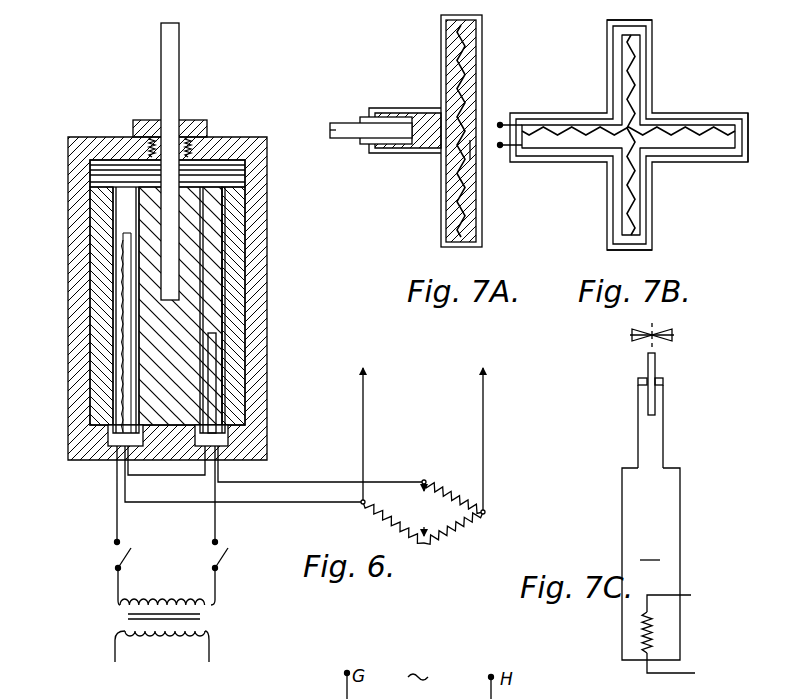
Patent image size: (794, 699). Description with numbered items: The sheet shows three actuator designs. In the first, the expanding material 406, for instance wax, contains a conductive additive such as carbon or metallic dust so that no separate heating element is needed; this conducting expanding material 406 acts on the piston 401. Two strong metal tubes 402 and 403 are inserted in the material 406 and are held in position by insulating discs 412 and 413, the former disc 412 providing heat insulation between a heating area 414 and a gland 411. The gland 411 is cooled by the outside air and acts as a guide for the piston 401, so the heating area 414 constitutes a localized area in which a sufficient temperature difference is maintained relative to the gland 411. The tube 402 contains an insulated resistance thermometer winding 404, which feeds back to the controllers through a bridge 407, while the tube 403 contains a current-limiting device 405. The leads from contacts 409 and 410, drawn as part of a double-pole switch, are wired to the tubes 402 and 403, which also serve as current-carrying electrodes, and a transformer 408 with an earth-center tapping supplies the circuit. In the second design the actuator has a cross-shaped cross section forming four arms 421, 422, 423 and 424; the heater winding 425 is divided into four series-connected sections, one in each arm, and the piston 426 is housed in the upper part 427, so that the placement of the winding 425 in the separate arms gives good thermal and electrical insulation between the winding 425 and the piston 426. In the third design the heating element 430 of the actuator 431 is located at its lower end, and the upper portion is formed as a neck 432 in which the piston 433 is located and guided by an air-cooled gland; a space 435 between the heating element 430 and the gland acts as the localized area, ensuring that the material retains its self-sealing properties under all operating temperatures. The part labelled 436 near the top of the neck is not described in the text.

In FIG. 6, the piston 401 is at (180, 65).
In FIG. 6, the metal tube 402 is at (100, 244).
In FIG. 6, the metal tube 403 is at (237, 262).
In FIG. 6, the insulated resistance thermometer winding 404 is at (112, 340).
In FIG. 6, the current-limiting device 405 is at (216, 334).
In FIG. 6, the conducting expanding material 406 is at (100, 396).
In FIG. 6, the bridge 407 is at (431, 458).
In FIG. 6, the transformer 408 is at (181, 615).
In FIG. 6, the contact 409 is at (99, 559).
In FIG. 6, the contact 410 is at (241, 559).
In FIG. 6, the gland 411 is at (207, 128).
In FIG. 7A, the gland 411 is at (362, 142).
In FIG. 6, the insulating disc 412 is at (245, 176).
In FIG. 6, the insulating disc 413 is at (225, 446).
In FIG. 6, the heating area 414 is at (178, 352).
In FIG. 7A, the heating area 414 is at (476, 150).
In FIG. 7B, the arm 421 is at (560, 152).
In FIG. 7B, the arm 422 is at (652, 222).
In FIG. 7B, the arm 423 is at (700, 118).
In FIG. 7B, the arm 424 is at (652, 58).
In FIG. 7A, the heater winding 425 is at (472, 55).
In FIG. 7B, the heater winding 425 is at (555, 128).
In FIG. 7A, the piston 426 is at (340, 124).
In FIG. 7A, the upper part 427 is at (404, 146).
In FIG. 7C, the heating element 430 is at (655, 636).
In FIG. 7C, the actuator 431 is at (684, 492).
In FIG. 7C, the neck 432 is at (650, 440).
In FIG. 7C, the piston 433 is at (655, 412).
In FIG. 7C, the space 435 is at (660, 548).
In FIG. 7C, the cap 436 is at (663, 381).